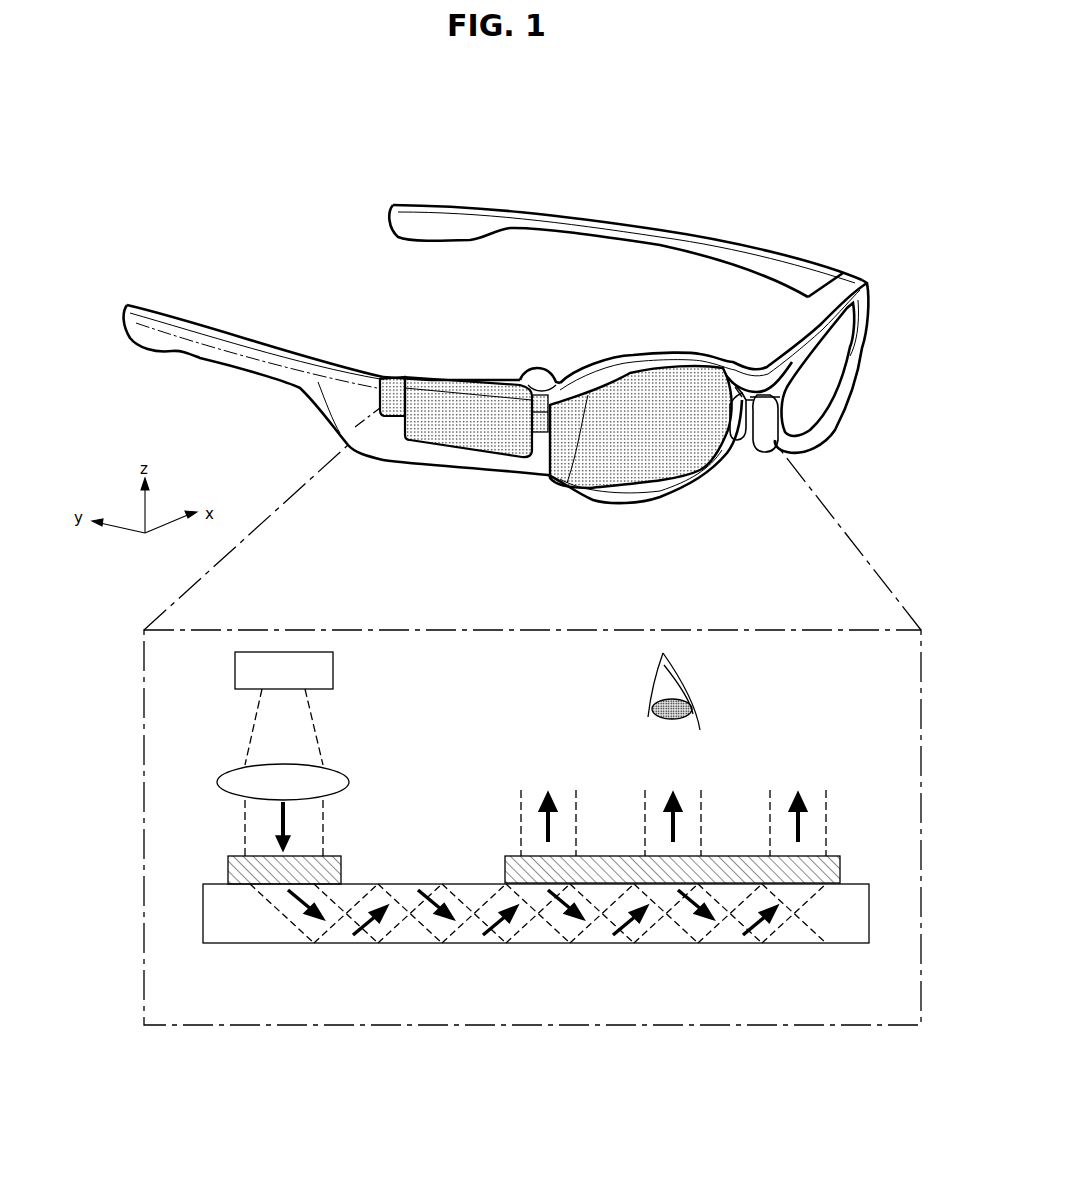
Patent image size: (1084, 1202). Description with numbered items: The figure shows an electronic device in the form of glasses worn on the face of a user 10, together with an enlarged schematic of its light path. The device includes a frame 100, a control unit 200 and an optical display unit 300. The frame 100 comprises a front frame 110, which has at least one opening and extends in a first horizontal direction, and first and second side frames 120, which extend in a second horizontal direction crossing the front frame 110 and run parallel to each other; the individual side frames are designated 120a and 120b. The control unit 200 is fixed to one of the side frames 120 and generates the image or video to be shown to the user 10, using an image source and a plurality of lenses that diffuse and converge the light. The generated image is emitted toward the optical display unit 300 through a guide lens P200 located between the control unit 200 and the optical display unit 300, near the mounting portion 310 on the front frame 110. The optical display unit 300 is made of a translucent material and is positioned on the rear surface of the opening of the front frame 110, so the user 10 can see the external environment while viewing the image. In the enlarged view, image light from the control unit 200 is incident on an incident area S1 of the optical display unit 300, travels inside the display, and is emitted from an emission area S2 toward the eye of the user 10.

The frame 100 is at (742, 108).
The front frame 110 is at (757, 365).
The first and second side frames 120 is at (866, 108).
The side frame 120a is at (216, 360).
The side frame 120b is at (431, 234).
The control unit 200 is at (488, 452).
The optical display unit 300 is at (640, 484).
The lens mounting part 310 is at (537, 377).
The guide lens P200 is at (550, 407).
The user 10 is at (697, 690).
The incident area S1 is at (228, 866).
The emission area S2 is at (842, 866).